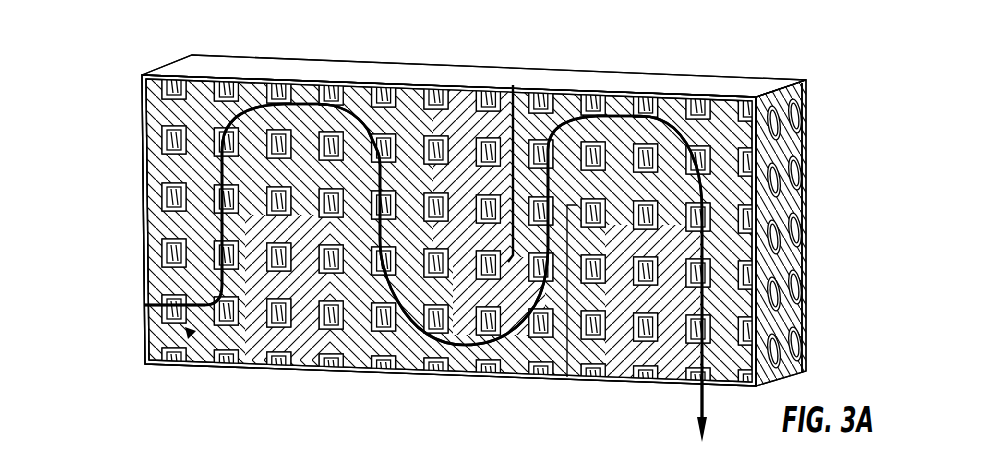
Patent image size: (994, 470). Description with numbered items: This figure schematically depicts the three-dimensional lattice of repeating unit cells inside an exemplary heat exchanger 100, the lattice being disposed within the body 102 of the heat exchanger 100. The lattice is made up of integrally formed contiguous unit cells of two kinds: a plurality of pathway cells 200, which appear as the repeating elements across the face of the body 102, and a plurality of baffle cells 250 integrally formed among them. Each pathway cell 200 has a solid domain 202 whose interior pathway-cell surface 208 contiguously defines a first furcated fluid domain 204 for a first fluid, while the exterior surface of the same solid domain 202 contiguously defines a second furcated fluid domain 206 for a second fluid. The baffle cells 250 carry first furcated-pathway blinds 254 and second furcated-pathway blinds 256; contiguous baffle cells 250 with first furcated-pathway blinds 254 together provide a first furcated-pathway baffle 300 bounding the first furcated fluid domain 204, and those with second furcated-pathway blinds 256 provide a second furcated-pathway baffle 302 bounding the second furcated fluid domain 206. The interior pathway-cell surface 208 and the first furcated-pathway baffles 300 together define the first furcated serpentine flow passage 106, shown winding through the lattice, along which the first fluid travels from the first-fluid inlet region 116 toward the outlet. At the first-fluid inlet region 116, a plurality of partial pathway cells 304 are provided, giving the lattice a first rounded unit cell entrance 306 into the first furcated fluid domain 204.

The heat exchanger 100 is at (792, 46).
The body 102 is at (665, 92).
The first furcated serpentine flow passage 106 is at (702, 397).
The first-fluid inlet region 116 is at (190, 336).
The pathway cells 200 is at (252, 105).
The solid domain 202 is at (238, 308).
The first furcated fluid domain 204 is at (354, 110).
The second furcated fluid domain 206 is at (390, 132).
The interior pathway-cell surface 208 is at (192, 228).
The baffle cells 250 is at (462, 105).
The first furcated-pathway blinds 254 is at (462, 234).
The second furcated-pathway blinds 256 is at (800, 262).
The first furcated-pathway baffle 300 is at (545, 215).
The second furcated-pathway baffle 302 is at (760, 213).
The partial pathway cells 304 is at (148, 282).
The first rounded unit cell entrance 306 is at (118, 336).